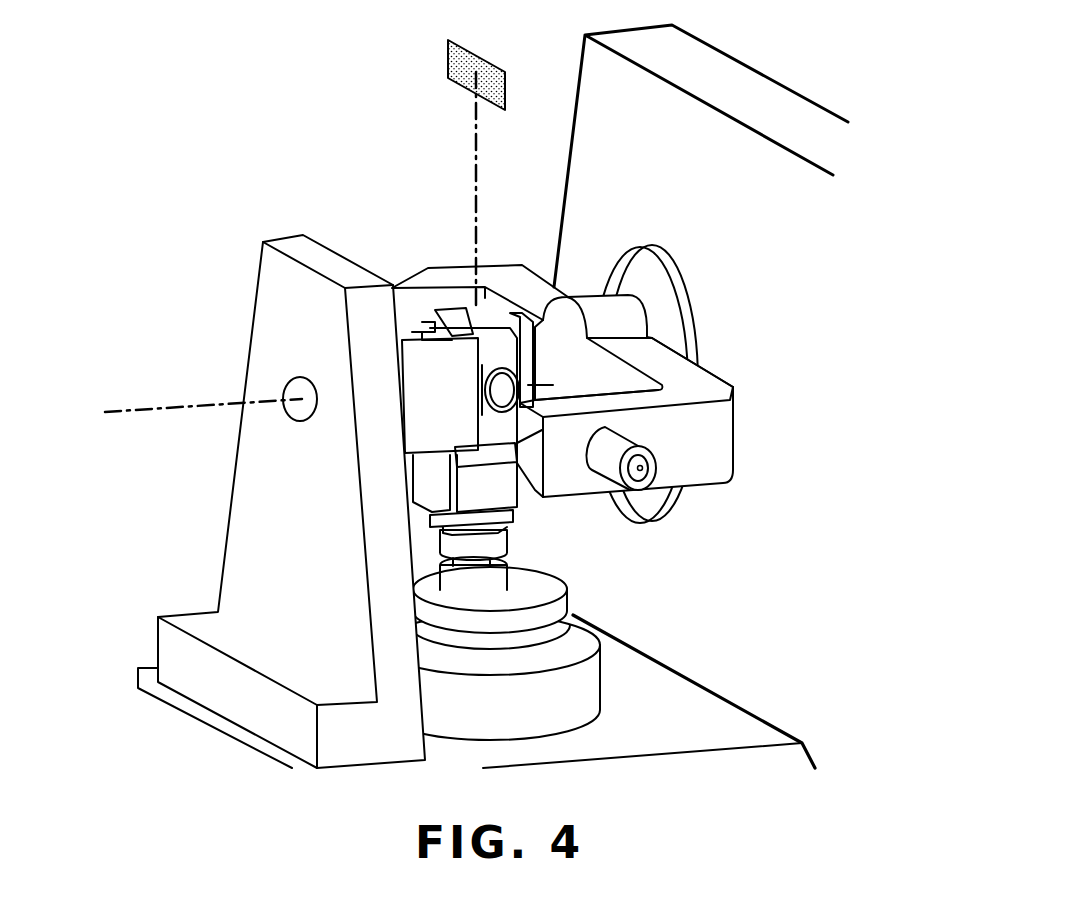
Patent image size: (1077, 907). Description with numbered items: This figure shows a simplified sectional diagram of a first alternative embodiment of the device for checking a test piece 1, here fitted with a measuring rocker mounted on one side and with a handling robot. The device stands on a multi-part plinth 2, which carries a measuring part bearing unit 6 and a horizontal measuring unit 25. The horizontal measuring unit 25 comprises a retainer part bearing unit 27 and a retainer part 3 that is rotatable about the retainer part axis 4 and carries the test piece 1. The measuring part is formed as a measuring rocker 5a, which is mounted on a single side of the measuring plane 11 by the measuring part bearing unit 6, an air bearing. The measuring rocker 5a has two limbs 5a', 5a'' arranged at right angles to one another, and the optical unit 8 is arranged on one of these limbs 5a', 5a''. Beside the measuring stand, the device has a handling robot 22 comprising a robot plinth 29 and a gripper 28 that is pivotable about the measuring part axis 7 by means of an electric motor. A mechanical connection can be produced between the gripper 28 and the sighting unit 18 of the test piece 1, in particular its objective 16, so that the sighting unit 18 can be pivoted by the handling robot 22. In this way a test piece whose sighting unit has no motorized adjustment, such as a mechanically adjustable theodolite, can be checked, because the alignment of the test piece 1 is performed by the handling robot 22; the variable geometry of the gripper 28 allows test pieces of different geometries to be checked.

The test piece 1 is at (501, 272).
The multi-part plinth 2 is at (677, 718).
The retainer part 3 is at (497, 543).
The retainer part axis 4 is at (476, 189).
The measuring rocker 5a is at (727, 372).
The limb 5a' is at (758, 346).
The limb 5a'' is at (736, 389).
The measuring part bearing unit 6 is at (626, 278).
The measuring part axis 7 is at (215, 405).
The optical unit 8 is at (642, 468).
The measuring plane 11 is at (456, 68).
The objective 16 is at (504, 385).
The sighting unit 18 is at (468, 315).
The handling robot 22 is at (254, 430).
The horizontal measuring unit 25 is at (622, 658).
The retainer part bearing unit 27 is at (525, 593).
The gripper 28 is at (495, 350).
The robot plinth 29 is at (286, 359).